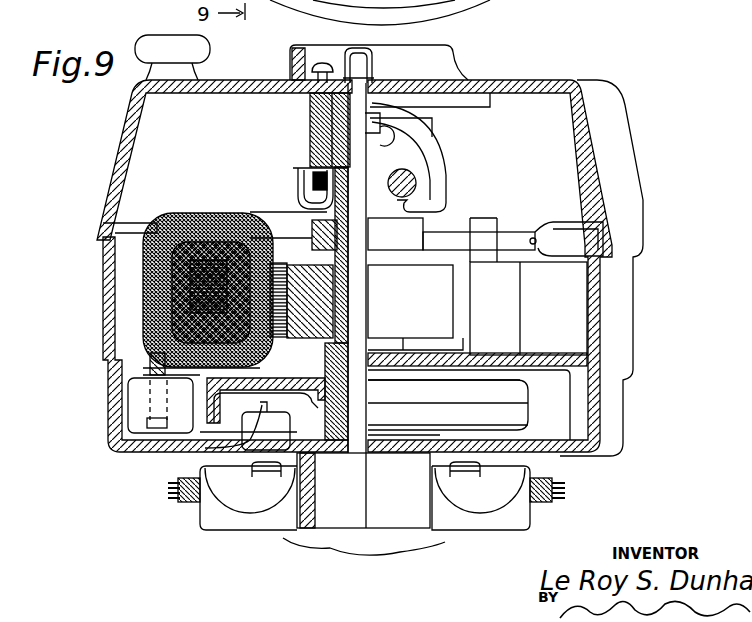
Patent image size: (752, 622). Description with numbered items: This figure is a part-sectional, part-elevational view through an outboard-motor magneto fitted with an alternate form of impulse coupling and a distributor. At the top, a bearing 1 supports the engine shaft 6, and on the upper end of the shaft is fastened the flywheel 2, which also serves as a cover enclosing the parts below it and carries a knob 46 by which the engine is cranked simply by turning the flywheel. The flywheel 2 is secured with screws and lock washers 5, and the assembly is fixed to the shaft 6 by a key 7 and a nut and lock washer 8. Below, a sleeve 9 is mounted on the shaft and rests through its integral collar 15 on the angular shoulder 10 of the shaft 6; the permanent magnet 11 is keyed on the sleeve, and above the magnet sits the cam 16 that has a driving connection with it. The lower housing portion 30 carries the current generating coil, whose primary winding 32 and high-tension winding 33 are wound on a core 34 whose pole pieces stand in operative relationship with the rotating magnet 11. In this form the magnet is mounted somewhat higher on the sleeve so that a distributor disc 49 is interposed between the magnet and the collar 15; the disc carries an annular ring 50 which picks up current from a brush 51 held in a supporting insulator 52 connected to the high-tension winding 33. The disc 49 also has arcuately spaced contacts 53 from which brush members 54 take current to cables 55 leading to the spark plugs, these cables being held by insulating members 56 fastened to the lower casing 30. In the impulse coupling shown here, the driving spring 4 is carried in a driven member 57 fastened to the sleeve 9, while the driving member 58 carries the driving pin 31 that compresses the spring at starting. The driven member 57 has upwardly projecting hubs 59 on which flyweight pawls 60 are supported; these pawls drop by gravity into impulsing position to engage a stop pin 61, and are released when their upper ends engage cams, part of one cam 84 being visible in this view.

The bearing 1 is at (350, 518).
The flywheel 2 is at (535, 86).
The driving spring 4 is at (300, 172).
The screws and lock washers 5 is at (318, 63).
The engine shaft 6 is at (355, 317).
The key 7 is at (362, 108).
The nut and lock washer 8 is at (365, 49).
The sleeve 9 is at (345, 290).
The shoulder 10 is at (356, 455).
The permanent magnet 11 is at (500, 315).
The collar 15 is at (334, 455).
The cam 16 is at (407, 233).
The lower housing portion 30 is at (115, 382).
The stud 31 is at (300, 176).
The primary winding 32 is at (143, 300).
The high-tension winding 33 is at (150, 326).
The core 34 is at (145, 279).
The knob 46 is at (210, 47).
The distributor disc 49 is at (515, 397).
The annular ring 50 is at (525, 418).
The brush 51 is at (205, 448).
The supporting insulator 52 is at (138, 406).
The contacts 53 is at (266, 410).
The brush members 54 is at (266, 422).
The cables 55 is at (188, 503).
The insulating members 56 is at (262, 516).
The driven member 57 is at (300, 192).
The driving member 58 is at (312, 113).
The hubs 59 is at (437, 118).
The flyweight pawls 60 is at (407, 150).
The stop pin 61 is at (417, 181).
The cam 84 is at (468, 108).